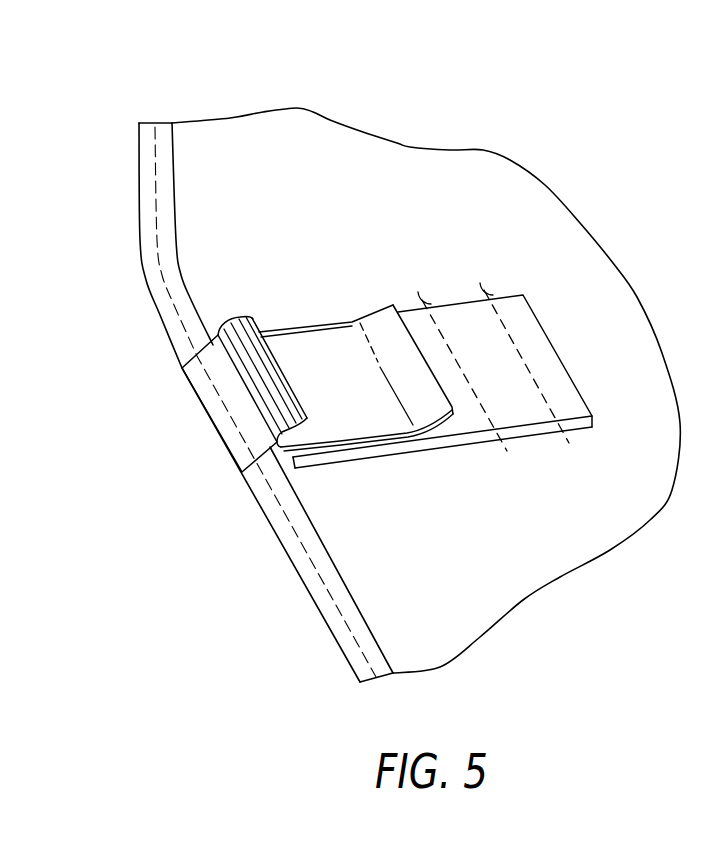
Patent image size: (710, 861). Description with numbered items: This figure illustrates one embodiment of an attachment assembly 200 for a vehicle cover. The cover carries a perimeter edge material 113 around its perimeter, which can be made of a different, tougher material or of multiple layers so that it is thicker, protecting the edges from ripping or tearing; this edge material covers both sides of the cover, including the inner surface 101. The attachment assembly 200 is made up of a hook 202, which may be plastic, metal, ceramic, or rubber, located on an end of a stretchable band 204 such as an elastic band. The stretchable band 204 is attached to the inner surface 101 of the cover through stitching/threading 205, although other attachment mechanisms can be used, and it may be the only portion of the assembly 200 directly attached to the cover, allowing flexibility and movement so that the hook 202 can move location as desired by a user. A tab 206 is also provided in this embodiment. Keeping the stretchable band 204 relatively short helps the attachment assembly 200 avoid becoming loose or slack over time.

The inner surface 101 is at (644, 370).
The perimeter edge material 113 is at (139, 157).
The attachment assembly 200 is at (378, 469).
The hook 202 is at (242, 320).
The stretchable band 204 is at (515, 405).
The stitching/threading 205 is at (536, 352).
The tab 206 is at (235, 414).